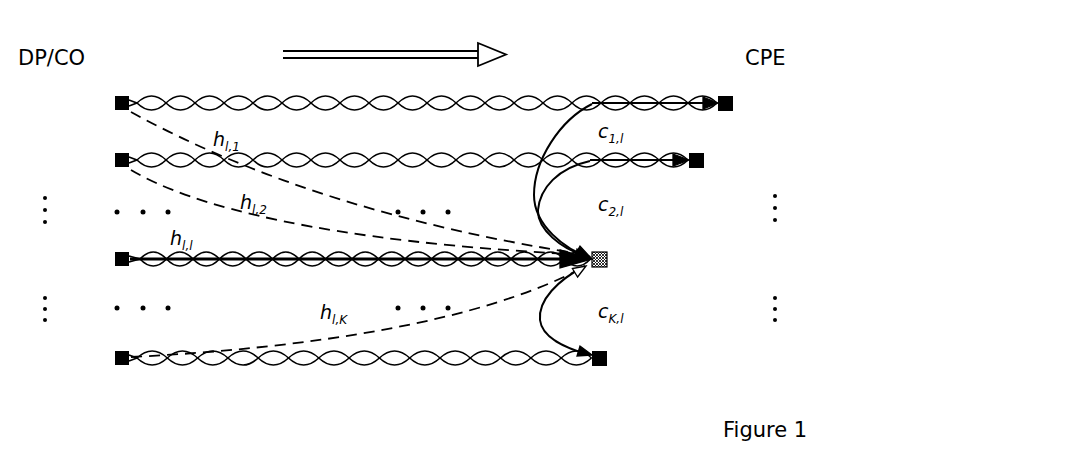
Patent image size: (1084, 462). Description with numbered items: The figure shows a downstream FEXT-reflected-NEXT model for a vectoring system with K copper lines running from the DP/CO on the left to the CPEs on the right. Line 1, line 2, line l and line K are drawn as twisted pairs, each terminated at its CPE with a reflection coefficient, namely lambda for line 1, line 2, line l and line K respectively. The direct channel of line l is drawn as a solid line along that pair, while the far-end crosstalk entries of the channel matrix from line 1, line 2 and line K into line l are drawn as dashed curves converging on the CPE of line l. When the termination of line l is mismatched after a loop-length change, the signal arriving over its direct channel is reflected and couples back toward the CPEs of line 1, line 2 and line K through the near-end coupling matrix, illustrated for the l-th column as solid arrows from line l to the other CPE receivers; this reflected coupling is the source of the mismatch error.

The line 1 is at (404, 103).
The line 2 is at (404, 161).
The line l is at (402, 260).
The line K is at (405, 359).